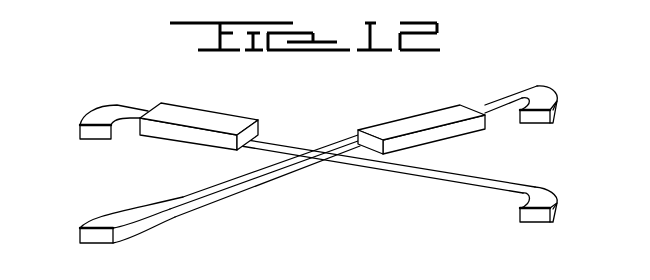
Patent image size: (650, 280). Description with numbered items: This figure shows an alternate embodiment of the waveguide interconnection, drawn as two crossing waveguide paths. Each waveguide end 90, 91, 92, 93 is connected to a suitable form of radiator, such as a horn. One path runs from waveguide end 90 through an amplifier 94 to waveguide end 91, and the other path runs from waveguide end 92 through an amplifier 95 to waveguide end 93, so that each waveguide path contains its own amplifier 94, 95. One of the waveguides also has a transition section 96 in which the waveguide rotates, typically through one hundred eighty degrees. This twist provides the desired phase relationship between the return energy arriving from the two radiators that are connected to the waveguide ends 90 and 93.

The waveguide end 90 is at (80, 132).
The waveguide end 91 is at (551, 218).
The waveguide end 92 is at (80, 238).
The waveguide end 93 is at (557, 113).
The amplifier 94 is at (216, 112).
The amplifier 95 is at (407, 116).
The transition section 96 is at (163, 213).